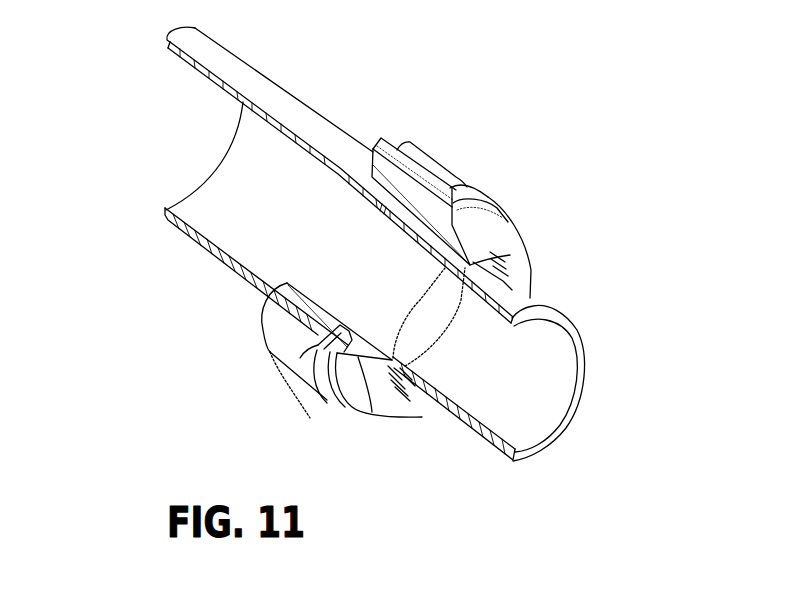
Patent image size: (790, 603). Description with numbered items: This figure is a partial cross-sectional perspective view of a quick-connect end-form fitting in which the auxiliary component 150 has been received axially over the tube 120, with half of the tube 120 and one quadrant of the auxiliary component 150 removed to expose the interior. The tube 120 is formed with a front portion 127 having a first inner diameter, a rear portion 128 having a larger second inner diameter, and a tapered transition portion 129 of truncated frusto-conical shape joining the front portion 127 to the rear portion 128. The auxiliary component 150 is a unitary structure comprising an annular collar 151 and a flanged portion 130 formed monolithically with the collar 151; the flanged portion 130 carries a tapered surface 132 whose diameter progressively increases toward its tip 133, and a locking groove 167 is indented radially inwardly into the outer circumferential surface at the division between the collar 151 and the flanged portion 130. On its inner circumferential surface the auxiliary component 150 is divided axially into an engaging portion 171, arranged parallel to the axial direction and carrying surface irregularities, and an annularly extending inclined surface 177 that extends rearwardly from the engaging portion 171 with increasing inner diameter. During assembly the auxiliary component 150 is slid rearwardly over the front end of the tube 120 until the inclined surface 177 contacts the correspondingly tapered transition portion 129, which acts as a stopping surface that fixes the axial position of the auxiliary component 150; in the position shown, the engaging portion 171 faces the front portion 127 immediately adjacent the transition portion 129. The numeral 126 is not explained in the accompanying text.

The tube 120 is at (360, 110).
The upper rail 126 is at (277, 93).
The front portion 127 is at (448, 446).
The rear portion 128 is at (194, 262).
The transition portion 129 is at (374, 222).
The flanged portion 130 is at (337, 420).
The tapered surface 132 is at (374, 414).
The tip 133 is at (323, 401).
The auxiliary component 150 is at (490, 164).
The annular collar 151 is at (268, 348).
The locking groove 167 is at (317, 347).
The engaging portion 171 is at (353, 311).
The inclined surface 177 is at (371, 206).